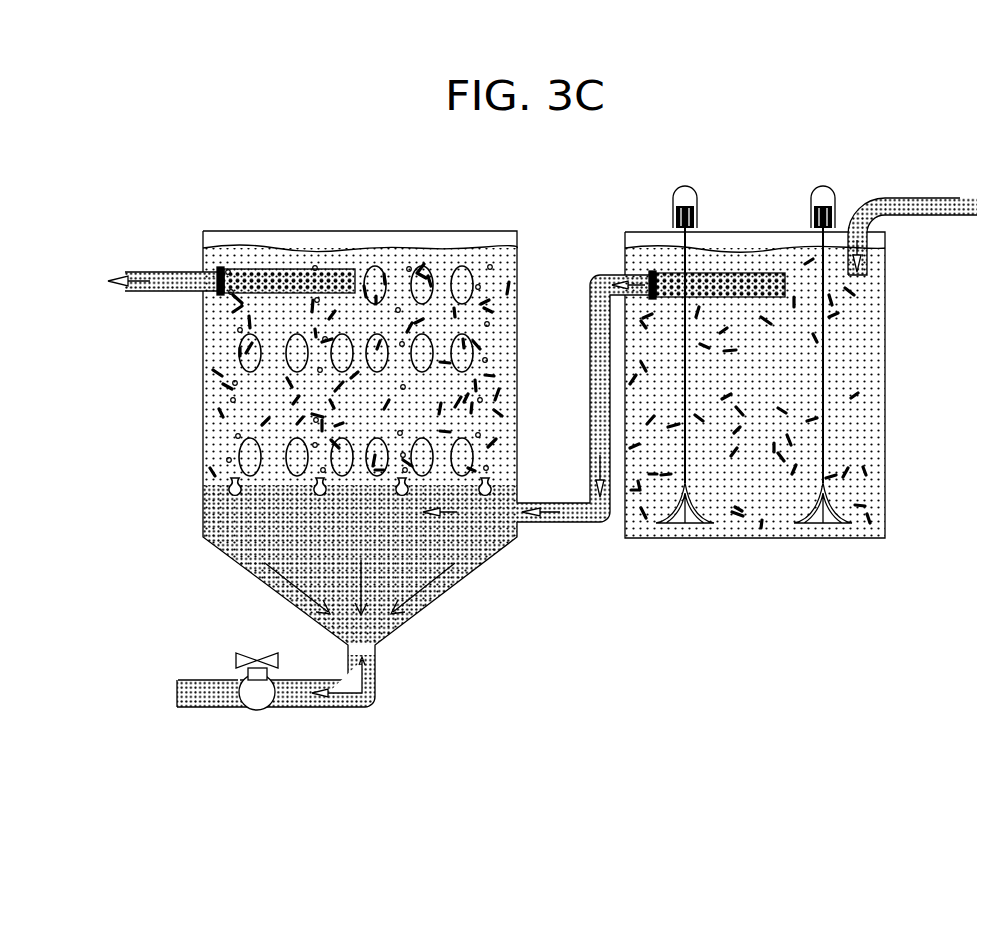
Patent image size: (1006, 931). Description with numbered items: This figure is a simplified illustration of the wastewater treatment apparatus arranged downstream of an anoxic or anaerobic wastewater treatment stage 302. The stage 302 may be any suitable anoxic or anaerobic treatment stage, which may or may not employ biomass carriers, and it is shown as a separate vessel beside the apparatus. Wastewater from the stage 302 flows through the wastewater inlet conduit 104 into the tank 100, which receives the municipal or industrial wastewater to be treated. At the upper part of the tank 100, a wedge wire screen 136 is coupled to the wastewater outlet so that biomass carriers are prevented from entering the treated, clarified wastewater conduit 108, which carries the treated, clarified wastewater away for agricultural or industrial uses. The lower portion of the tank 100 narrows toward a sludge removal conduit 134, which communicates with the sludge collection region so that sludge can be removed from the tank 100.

The tank 100 is at (290, 230).
The treated, clarified wastewater conduit 108 is at (172, 272).
The wedge wire screen 136 is at (310, 262).
The wastewater inlet conduit 104 is at (540, 503).
The anoxic or anaerobic wastewater treatment stage 302 is at (886, 360).
The sludge removal conduit 134 is at (349, 708).